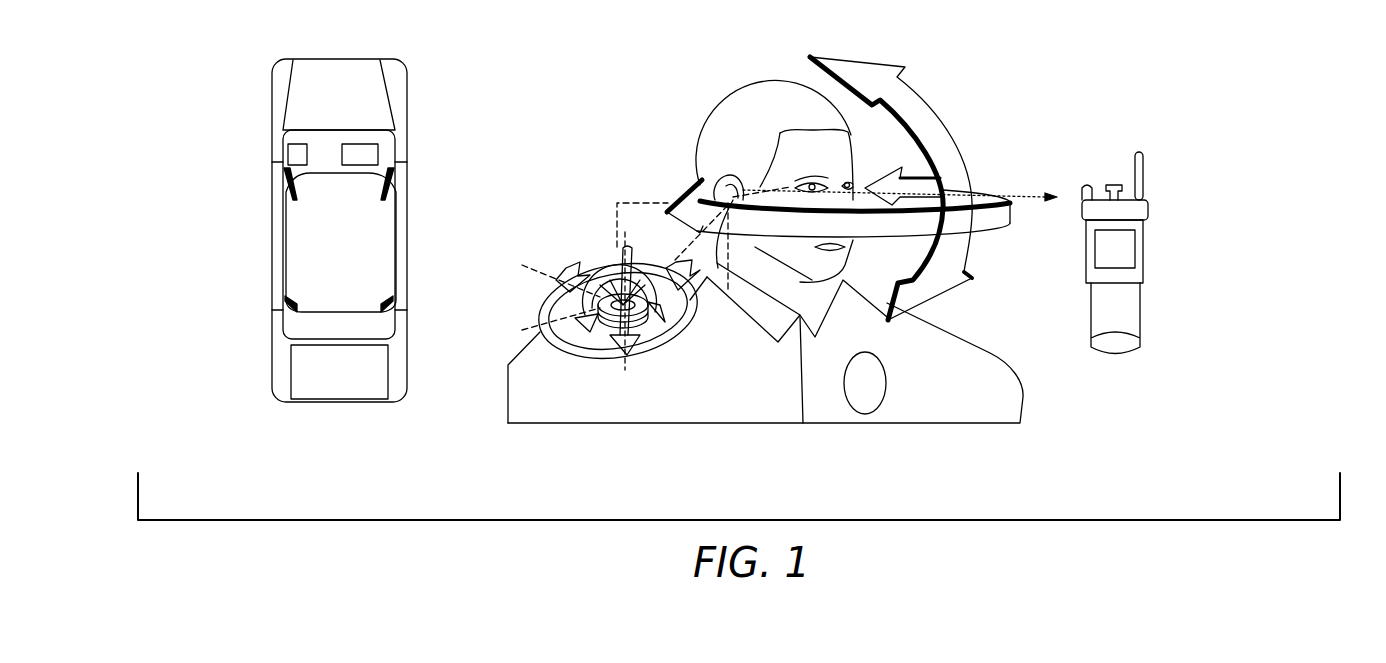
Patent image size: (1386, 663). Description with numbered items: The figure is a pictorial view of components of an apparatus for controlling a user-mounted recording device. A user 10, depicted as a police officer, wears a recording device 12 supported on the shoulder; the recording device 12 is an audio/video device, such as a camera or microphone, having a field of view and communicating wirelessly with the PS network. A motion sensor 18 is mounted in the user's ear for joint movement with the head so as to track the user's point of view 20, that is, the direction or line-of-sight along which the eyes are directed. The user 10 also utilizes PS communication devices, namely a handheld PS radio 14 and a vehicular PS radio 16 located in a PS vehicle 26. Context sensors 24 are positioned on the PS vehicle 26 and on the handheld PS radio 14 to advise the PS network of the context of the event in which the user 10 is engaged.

The user 10 is at (948, 332).
The recording device 12 is at (600, 272).
The handheld PS radio 14 is at (1145, 240).
The vehicular PS radio 16 is at (363, 155).
The motion sensor 18 is at (733, 196).
The point of view 20 is at (1025, 196).
The context sensor 24 is at (1193, 403).
The PS vehicle 26 is at (343, 391).